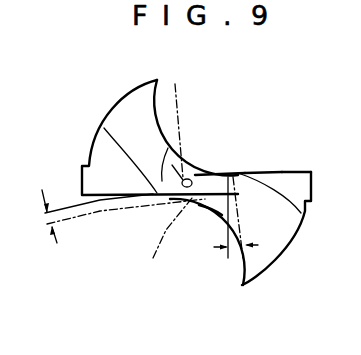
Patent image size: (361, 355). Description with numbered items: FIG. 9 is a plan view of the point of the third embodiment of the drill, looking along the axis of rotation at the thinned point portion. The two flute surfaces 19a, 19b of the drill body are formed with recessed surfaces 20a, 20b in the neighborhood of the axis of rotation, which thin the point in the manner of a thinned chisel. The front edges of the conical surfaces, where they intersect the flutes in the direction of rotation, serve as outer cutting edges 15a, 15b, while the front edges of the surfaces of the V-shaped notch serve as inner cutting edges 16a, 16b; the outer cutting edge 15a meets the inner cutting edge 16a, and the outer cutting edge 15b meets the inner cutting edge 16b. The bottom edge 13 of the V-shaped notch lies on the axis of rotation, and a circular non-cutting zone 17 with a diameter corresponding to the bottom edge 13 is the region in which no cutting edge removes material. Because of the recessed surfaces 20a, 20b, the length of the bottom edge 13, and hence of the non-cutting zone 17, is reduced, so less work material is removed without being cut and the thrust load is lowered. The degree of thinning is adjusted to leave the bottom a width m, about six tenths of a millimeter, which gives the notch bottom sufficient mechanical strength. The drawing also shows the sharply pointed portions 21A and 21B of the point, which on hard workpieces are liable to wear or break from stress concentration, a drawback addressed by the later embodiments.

The sharply pointed portion 21B is at (104, 128).
The sharply pointed portion 21A is at (299, 216).
The non-cutting zone 17 is at (181, 118).
The bottom edge 13 is at (165, 243).
The recessed surface 20a is at (196, 170).
The recessed surface 20b is at (212, 204).
The inner cutting edge 16a is at (223, 170).
The inner cutting edge 16b is at (142, 209).
The flute surface 19a is at (268, 170).
The flute surface 19b is at (199, 205).
The outer cutting edge 15a is at (295, 171).
The outer cutting edge 15b is at (92, 196).
The width of bottom of V-shaped notch m is at (48, 222).